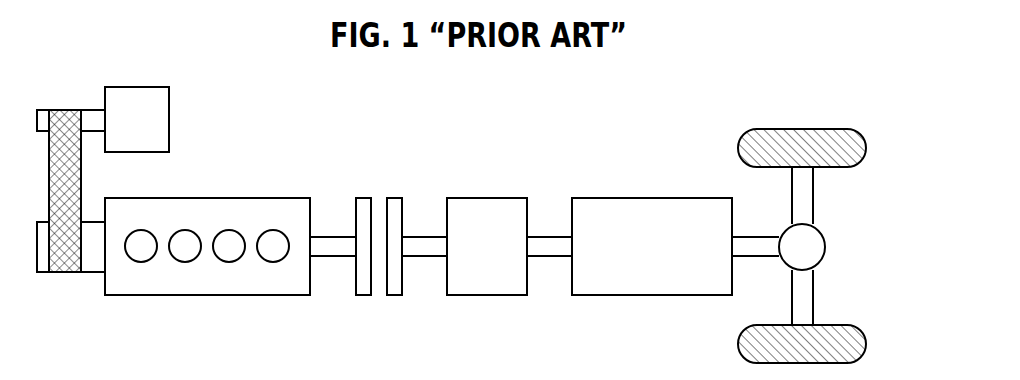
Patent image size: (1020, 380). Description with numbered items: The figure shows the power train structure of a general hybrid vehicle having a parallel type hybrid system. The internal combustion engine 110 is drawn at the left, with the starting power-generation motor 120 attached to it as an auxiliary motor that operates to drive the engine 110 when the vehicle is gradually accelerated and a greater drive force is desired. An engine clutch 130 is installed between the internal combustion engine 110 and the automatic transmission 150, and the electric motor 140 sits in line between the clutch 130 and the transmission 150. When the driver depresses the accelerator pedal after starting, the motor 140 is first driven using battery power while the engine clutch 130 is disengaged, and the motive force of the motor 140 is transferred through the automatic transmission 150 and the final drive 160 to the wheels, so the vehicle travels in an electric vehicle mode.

The internal combustion engine 110 is at (284, 198).
The starting power-generation motor 120 is at (169, 112).
The engine clutch 130 is at (390, 198).
The electric motor 140 is at (485, 198).
The automatic transmission 150 is at (639, 198).
The final drive 160 is at (826, 237).